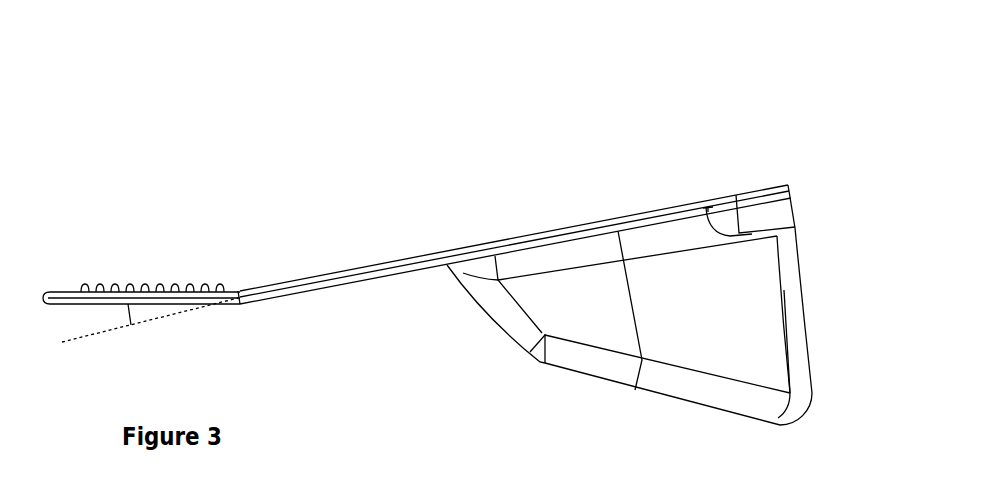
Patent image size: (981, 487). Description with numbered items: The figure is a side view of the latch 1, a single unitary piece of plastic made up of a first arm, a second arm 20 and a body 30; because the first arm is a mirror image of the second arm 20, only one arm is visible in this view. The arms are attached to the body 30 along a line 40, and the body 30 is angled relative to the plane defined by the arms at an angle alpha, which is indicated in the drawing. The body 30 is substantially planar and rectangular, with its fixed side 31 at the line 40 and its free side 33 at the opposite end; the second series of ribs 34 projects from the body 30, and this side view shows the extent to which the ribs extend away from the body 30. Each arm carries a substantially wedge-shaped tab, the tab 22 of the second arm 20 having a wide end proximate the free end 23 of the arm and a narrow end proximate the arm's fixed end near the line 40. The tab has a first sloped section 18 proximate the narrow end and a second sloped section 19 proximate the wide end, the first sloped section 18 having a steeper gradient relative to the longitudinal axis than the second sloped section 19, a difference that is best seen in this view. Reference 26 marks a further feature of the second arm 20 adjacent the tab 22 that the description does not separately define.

The latch 1 is at (490, 68).
The first sloped section 18 is at (503, 322).
The second sloped section 19 is at (765, 404).
The second arm 20 is at (737, 267).
The tab 22 is at (748, 323).
The free end 23 is at (790, 190).
The hook 26 is at (770, 215).
The body 30 is at (127, 295).
The fixed side 31 is at (238, 293).
The free side 33 is at (40, 297).
The second series of ribs 34 is at (188, 283).
The line 40 is at (238, 303).